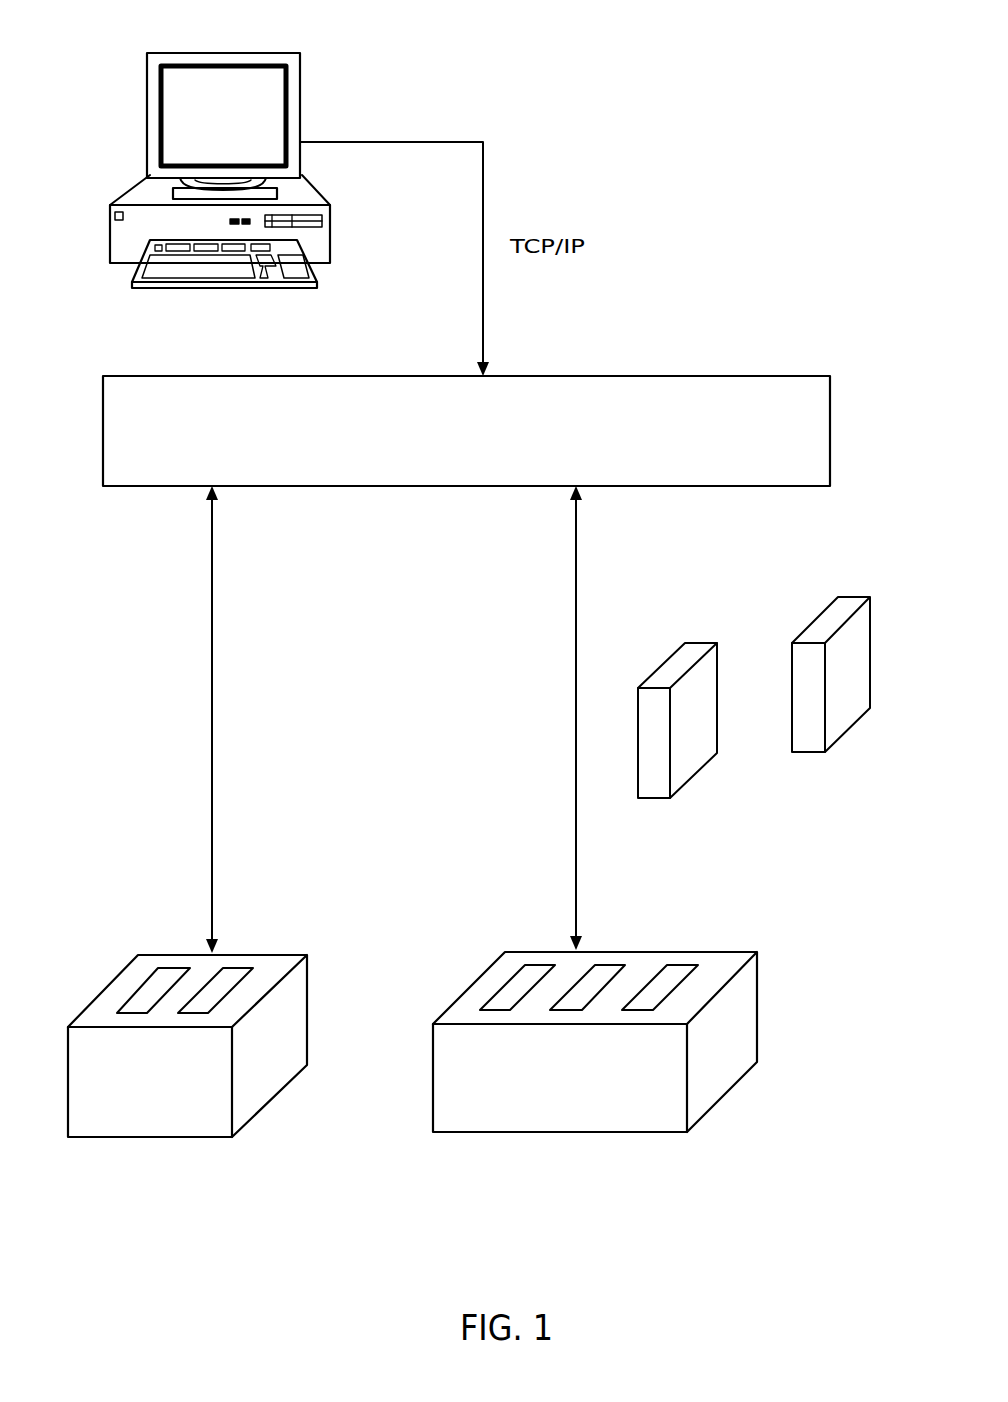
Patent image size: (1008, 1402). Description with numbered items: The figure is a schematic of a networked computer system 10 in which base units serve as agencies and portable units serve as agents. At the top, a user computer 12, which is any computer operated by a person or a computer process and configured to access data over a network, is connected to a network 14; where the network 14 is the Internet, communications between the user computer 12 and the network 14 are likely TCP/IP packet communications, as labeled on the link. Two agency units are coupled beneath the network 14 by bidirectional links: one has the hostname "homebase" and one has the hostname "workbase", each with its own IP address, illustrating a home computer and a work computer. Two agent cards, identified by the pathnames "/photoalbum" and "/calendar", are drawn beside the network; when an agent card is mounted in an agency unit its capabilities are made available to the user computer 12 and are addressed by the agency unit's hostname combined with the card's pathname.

The networked computer system 10 is at (714, 116).
The user computer 12 is at (300, 88).
The network 14 is at (720, 375).